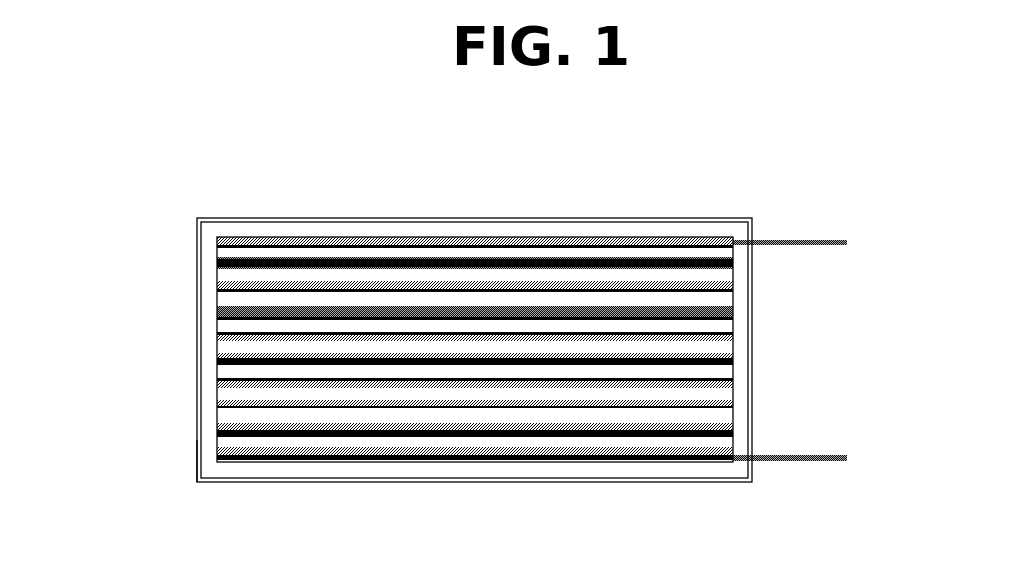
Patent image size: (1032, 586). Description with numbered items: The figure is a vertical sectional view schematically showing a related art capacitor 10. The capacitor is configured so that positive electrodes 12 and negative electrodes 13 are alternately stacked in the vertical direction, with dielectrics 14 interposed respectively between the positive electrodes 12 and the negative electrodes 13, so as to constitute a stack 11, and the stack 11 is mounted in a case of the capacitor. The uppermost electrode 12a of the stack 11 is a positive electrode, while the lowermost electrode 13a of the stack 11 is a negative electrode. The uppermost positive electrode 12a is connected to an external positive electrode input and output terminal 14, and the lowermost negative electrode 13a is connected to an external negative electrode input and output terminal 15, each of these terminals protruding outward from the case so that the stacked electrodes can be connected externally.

The secondary battery 10 is at (117, 131).
The stack 11 is at (271, 229).
The positive electrodes 12 is at (217, 298).
The uppermost electrode 12a is at (217, 246).
The negative electrodes 13 is at (217, 321).
The lowermost electrode 13a is at (197, 475).
The dielectric 14 is at (805, 241).
The external negative electrode input and output terminal 15 is at (795, 458).